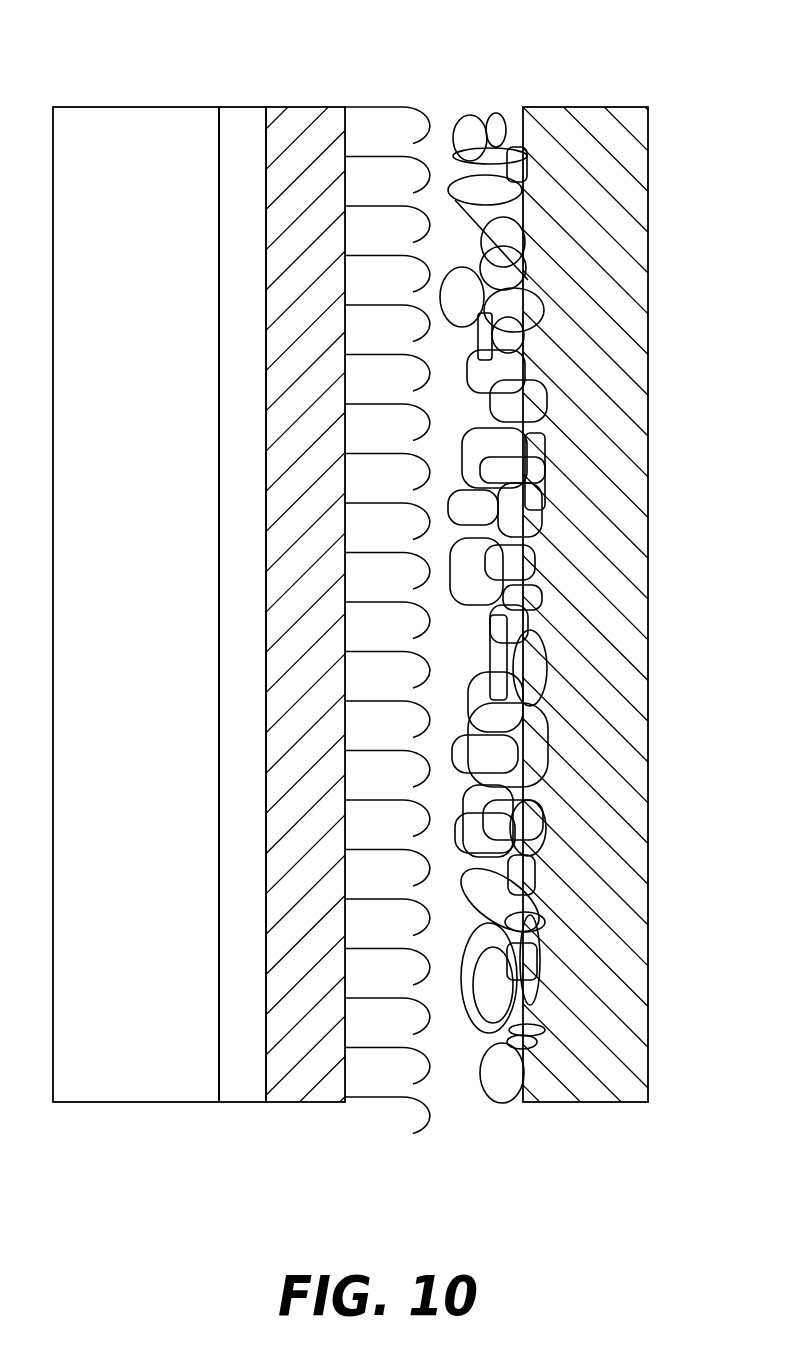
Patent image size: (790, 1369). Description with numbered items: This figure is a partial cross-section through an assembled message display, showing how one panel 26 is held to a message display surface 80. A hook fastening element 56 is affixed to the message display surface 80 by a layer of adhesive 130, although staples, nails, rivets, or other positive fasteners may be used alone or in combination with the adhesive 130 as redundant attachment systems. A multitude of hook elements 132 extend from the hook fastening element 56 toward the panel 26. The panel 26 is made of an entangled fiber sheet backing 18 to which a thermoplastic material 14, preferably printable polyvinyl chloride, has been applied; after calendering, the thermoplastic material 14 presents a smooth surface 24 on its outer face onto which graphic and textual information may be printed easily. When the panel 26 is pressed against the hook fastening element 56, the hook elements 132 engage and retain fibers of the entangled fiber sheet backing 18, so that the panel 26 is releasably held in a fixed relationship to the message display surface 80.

The message display surface 80 is at (108, 1092).
The adhesive 130 is at (237, 1082).
The hook fastening element 56 is at (324, 619).
The hook elements 132 is at (358, 107).
The entangled fiber sheet backing 18 is at (458, 75).
The thermoplastic material 14 is at (626, 605).
The smooth surface 24 is at (648, 583).
The panel 26 is at (584, 611).